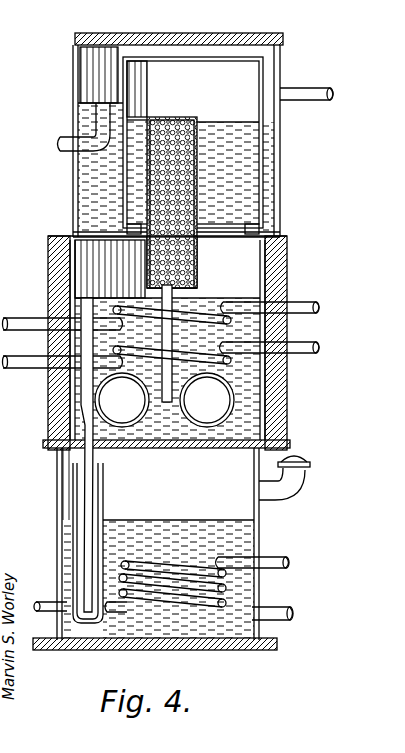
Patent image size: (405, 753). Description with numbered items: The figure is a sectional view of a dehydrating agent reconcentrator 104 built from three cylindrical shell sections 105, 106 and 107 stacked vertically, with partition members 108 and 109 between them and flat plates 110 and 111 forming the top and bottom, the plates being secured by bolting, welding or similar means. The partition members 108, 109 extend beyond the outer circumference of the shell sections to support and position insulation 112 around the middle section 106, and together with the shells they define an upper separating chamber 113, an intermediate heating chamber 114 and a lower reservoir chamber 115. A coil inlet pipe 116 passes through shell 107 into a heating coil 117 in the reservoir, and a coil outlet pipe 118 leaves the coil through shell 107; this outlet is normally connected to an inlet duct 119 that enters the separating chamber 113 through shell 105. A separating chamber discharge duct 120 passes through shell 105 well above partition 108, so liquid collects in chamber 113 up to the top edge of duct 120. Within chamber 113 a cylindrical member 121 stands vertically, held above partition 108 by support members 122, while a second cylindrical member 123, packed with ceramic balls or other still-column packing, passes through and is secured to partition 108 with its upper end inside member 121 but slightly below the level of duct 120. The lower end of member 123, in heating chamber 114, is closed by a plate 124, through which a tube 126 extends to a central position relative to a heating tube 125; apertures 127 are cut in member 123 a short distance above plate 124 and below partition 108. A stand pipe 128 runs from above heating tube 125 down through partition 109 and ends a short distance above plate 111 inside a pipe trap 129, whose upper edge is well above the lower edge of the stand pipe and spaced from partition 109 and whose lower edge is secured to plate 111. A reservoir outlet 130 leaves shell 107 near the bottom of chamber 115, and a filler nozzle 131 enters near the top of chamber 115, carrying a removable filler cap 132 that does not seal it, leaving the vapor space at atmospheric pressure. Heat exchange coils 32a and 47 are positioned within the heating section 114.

The reconcentrator 104 is at (193, 351).
The cylindrical shell section 105 is at (280, 166).
The cylindrical shell section 106 is at (287, 252).
The cylindrical shell section 107 is at (62, 516).
The partition member 108 is at (58, 236).
The partition member 109 is at (52, 449).
The flat plate 110 is at (256, 40).
The flat plate 111 is at (241, 662).
The insulation 112 is at (287, 272).
The upper separating chamber 113 is at (78, 176).
The intermediate heating chamber 114 is at (276, 406).
The lower reservoir chamber 115 is at (262, 541).
The coil inlet pipe 116 is at (40, 598).
The heating coil 117 is at (151, 570).
The coil outlet pipe 118 is at (292, 566).
The inlet duct 119 is at (325, 95).
The separating chamber discharge duct 120 is at (52, 137).
The cylindrical member 121 is at (122, 73).
The support members 122 is at (118, 228).
The cylindrical member 123 is at (208, 118).
The plate 124 is at (147, 300).
The heating tube 125 is at (256, 430).
The tube 126 is at (168, 404).
The apertures 127 is at (197, 276).
The stand pipe 128 is at (96, 467).
The pipe trap 129 is at (104, 510).
The reservoir outlet 130 is at (296, 613).
The filler nozzle 131 is at (294, 480).
The filler cap 132 is at (312, 465).
The heat exchange coil 32a is at (213, 306).
The heat exchange coil 47 is at (199, 363).